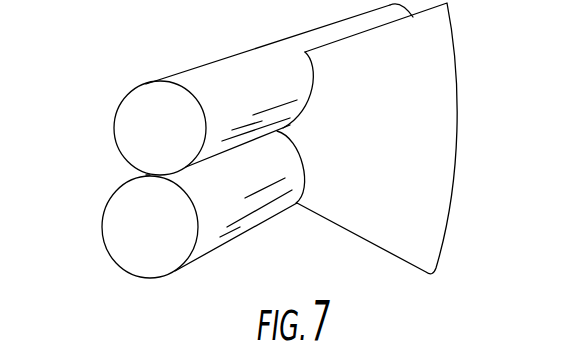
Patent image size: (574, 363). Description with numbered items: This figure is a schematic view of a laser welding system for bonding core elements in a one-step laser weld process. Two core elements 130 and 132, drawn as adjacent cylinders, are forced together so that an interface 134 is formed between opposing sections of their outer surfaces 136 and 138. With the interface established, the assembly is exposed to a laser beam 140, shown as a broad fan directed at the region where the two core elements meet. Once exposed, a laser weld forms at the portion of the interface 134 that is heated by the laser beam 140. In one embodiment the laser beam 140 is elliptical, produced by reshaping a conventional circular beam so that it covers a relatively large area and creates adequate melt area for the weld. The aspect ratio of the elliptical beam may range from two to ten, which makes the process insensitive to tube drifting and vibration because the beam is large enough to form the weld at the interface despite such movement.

The core element 130 is at (137, 137).
The core element 132 is at (137, 253).
The interface 134 is at (137, 174).
The outer surface 136 is at (230, 72).
The outer surface 138 is at (237, 222).
The laser beam 140 is at (430, 145).